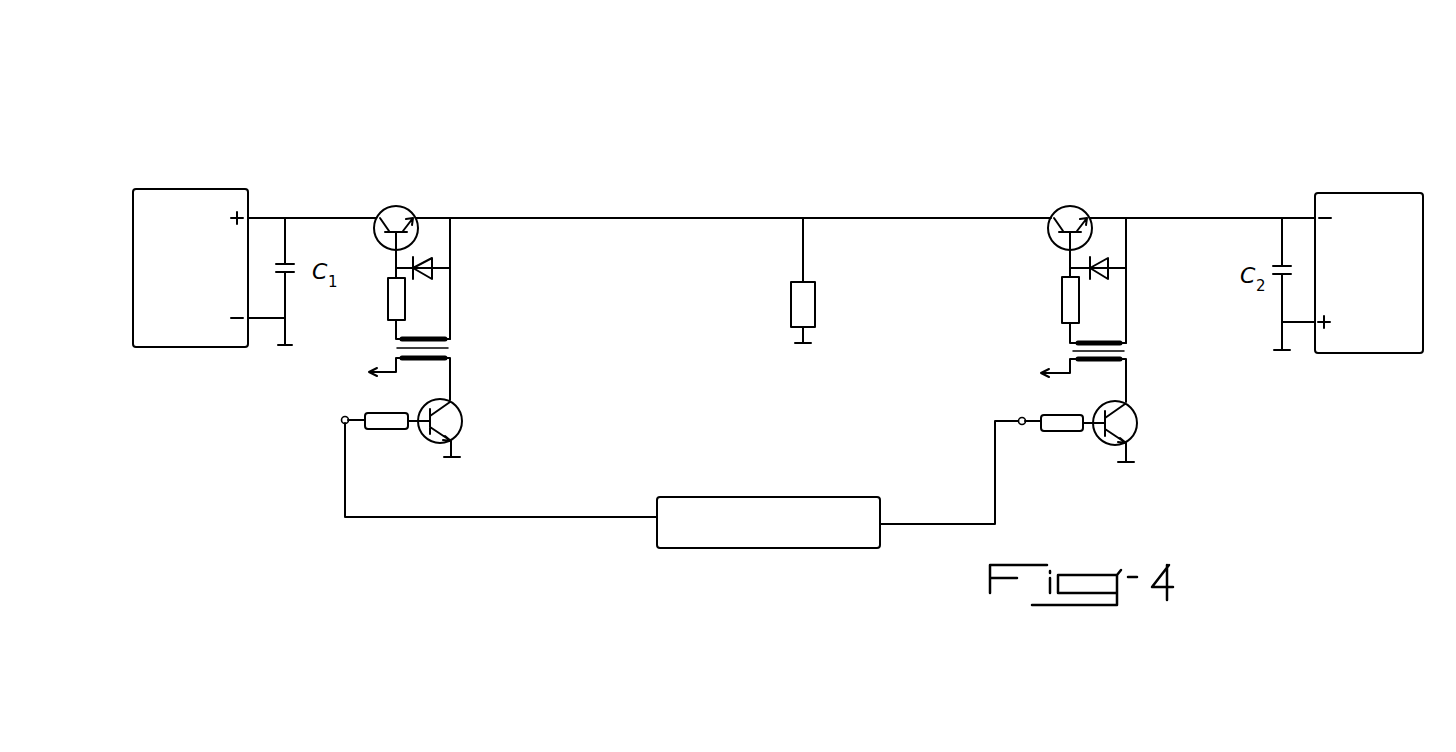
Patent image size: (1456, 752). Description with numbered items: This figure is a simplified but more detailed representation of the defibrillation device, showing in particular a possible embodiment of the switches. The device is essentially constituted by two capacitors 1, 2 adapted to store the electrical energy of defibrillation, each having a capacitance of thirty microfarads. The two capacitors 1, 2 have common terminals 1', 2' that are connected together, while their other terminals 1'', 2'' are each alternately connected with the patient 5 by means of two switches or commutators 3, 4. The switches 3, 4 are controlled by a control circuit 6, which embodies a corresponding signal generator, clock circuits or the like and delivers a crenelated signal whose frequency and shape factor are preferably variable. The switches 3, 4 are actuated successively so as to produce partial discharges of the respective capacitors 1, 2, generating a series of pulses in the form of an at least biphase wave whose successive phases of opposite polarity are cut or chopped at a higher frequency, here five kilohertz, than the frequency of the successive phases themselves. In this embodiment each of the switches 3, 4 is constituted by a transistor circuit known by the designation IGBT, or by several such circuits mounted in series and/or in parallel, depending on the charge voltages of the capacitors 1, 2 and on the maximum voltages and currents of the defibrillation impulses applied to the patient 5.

The capacitor 1 is at (178, 268).
The common terminal of capacitor 1' is at (255, 397).
The other terminal of capacitor 1'' is at (279, 134).
The capacitor 2 is at (1378, 273).
The common terminal of capacitor 2' is at (1297, 396).
The other terminal of capacitor 2'' is at (1307, 130).
The switch or commutator 3 is at (409, 155).
The switch or commutator 4 is at (1100, 150).
The patient 5 is at (795, 303).
The control circuit 6 is at (764, 548).